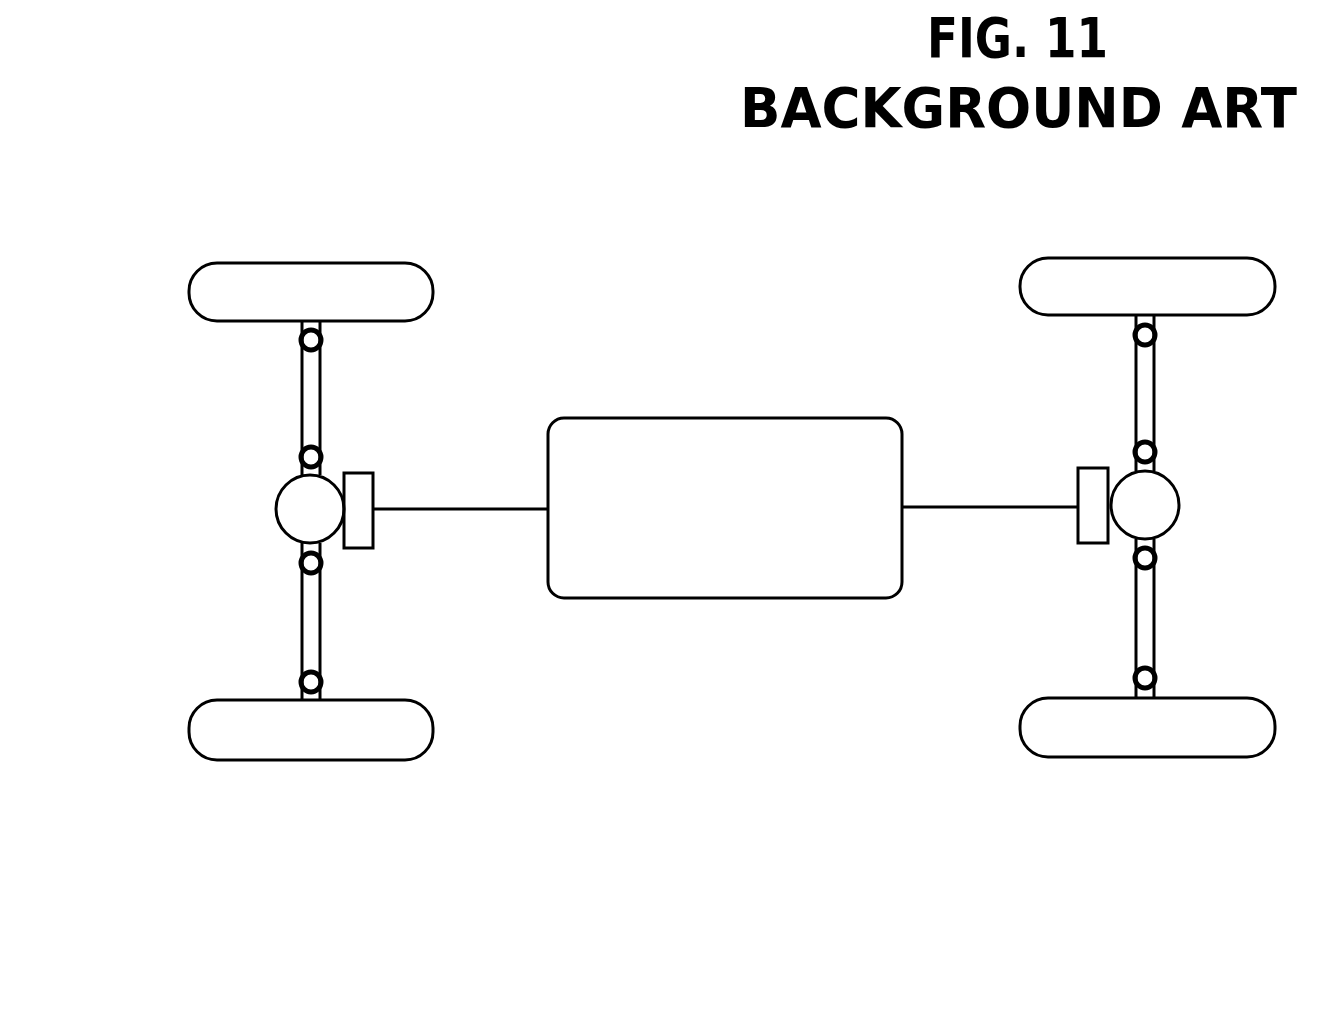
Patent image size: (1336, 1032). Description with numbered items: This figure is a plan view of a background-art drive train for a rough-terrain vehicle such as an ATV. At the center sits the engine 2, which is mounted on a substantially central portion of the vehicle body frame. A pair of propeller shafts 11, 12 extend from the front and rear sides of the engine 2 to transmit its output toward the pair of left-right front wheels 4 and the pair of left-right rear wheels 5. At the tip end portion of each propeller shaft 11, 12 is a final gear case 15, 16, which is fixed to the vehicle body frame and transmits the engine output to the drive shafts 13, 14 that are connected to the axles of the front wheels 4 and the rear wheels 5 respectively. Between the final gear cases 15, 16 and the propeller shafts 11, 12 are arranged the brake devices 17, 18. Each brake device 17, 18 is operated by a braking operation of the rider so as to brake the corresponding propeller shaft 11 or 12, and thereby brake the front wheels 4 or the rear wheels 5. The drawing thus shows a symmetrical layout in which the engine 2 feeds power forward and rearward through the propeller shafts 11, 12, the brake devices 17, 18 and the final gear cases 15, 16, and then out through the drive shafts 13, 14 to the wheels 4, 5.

The engine 2 is at (733, 578).
The front wheels 4 is at (380, 288).
The rear wheels 5 is at (1222, 258).
The propeller shaft 11 is at (503, 508).
The propeller shaft 12 is at (970, 505).
The drive shaft 13 is at (308, 403).
The drive shaft 14 is at (1157, 392).
The final gear case 15 is at (298, 512).
The final gear case 16 is at (1183, 504).
The brake device 17 is at (360, 550).
The brake device 18 is at (1076, 482).